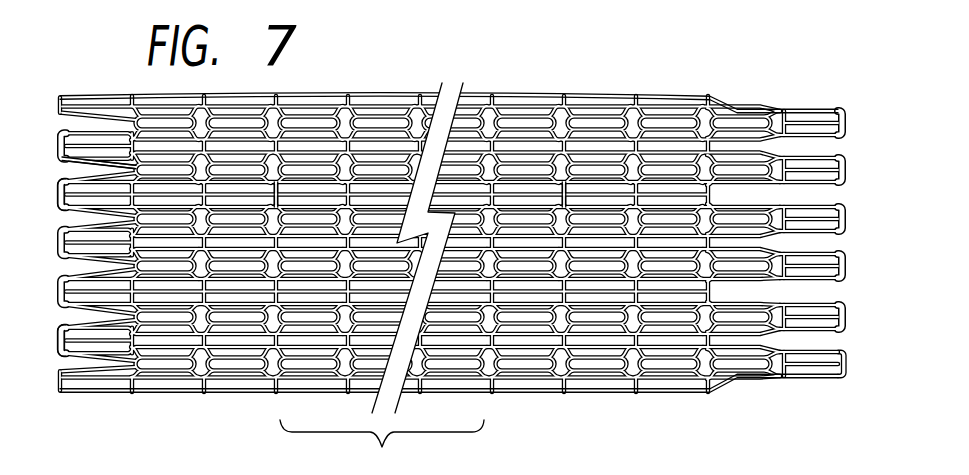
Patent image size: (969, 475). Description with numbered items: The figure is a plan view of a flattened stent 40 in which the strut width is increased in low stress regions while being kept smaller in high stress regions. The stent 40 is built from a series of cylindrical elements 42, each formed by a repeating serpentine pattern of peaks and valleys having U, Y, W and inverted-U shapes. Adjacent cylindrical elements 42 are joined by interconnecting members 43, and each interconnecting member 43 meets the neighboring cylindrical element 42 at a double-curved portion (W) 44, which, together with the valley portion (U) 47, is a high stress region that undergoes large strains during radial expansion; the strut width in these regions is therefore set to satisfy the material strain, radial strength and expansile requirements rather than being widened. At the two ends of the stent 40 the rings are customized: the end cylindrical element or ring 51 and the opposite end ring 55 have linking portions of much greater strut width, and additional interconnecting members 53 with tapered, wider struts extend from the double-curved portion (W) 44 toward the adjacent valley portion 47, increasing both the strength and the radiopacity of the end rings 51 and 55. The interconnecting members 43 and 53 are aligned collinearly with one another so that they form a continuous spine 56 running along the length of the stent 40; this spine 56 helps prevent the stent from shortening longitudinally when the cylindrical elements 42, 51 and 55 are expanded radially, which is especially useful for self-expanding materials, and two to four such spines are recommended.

The stent 40 is at (806, 94).
The cylindrical element 42 is at (156, 95).
The interconnecting member 43 is at (267, 188).
The double-curved portion (W) 44 is at (64, 336).
The valley portion (U) 47 is at (120, 167).
The end cylindrical element or ring 51 is at (90, 394).
The interconnecting member 53 is at (78, 205).
The end ring 55 is at (805, 380).
The continuous spine 56 is at (549, 190).